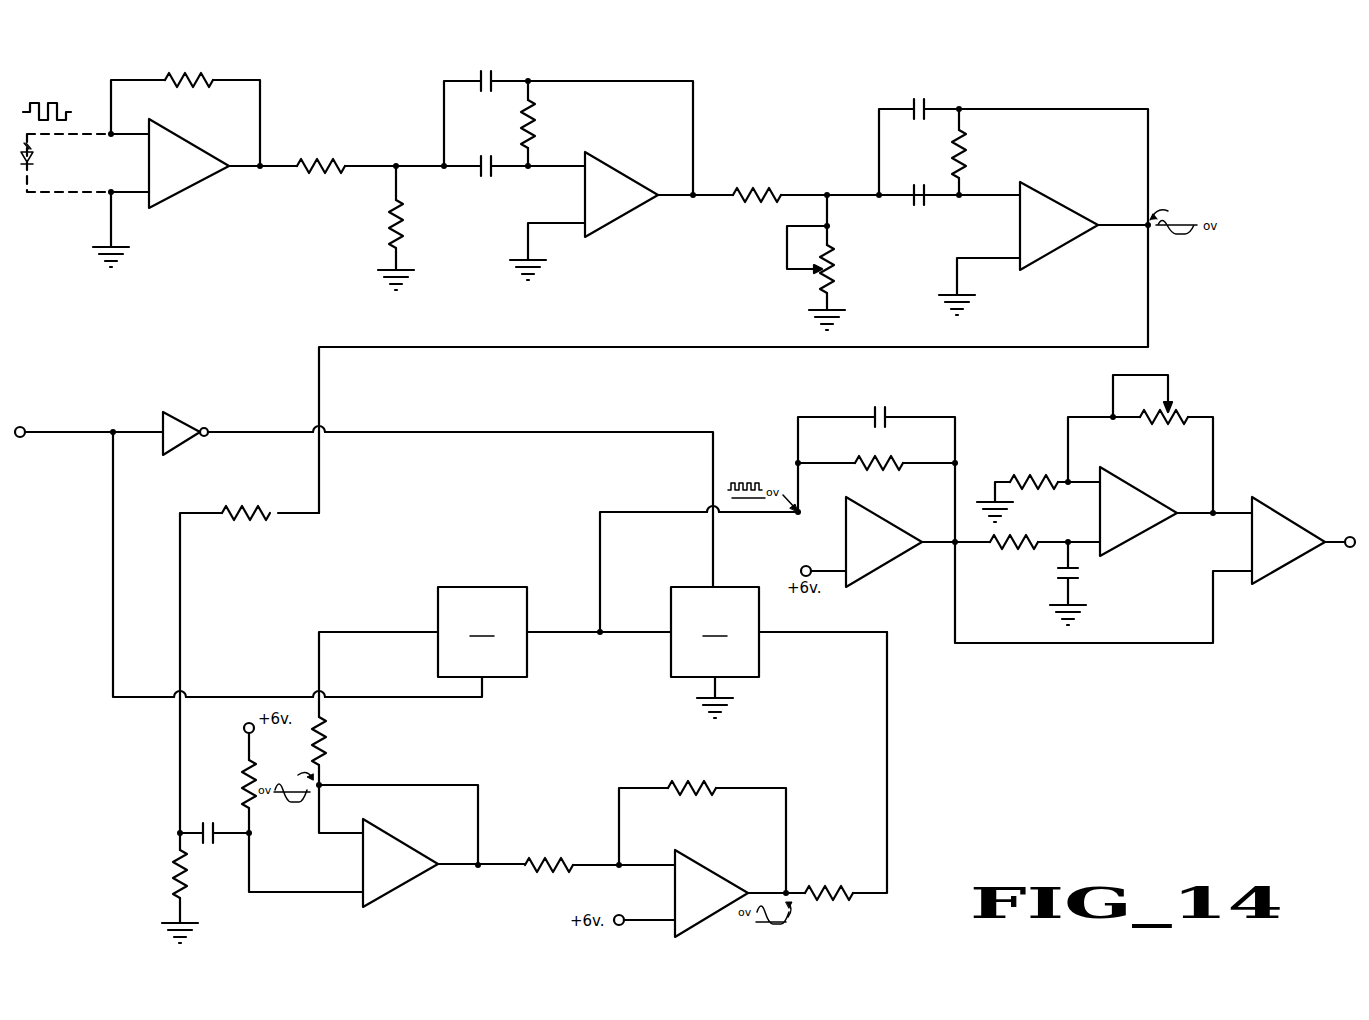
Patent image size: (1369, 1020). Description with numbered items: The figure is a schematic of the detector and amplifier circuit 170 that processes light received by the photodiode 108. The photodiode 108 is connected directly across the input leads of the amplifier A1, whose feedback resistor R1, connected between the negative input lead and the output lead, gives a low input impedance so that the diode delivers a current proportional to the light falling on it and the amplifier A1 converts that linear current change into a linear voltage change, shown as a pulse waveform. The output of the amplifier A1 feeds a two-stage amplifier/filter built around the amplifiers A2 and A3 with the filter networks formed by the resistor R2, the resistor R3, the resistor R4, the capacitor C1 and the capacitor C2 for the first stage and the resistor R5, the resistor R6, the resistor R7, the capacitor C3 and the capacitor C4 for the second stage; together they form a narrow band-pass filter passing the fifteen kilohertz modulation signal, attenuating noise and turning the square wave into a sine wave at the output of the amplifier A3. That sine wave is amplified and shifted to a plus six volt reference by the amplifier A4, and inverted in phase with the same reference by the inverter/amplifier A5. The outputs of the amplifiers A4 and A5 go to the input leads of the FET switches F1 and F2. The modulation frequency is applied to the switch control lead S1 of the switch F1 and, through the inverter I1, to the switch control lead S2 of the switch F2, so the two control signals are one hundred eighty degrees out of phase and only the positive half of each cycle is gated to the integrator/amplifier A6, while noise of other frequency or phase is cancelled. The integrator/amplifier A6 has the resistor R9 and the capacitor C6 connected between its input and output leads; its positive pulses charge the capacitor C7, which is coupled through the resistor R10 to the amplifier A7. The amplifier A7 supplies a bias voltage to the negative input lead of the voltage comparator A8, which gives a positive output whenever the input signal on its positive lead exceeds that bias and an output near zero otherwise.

The photodiode 108 is at (40, 160).
The amplifier circuit 170 is at (1070, 87).
The amplifier A1 is at (180, 138).
The amplifier A2 is at (612, 166).
The amplifier A3 is at (1040, 197).
The amplifier A4 is at (385, 834).
The inverter/amplifier A5 is at (690, 858).
The integrator/amplifier A6 is at (876, 520).
The amplifier A7 is at (1125, 488).
The voltage comparator A8 is at (1268, 512).
The feedback resistor R1 is at (190, 75).
The resistor R2 is at (325, 160).
The resistor R3 is at (390, 210).
The resistor R4 is at (535, 118).
The resistor R5 is at (758, 190).
The resistor R6 is at (838, 272).
The resistor R7 is at (966, 152).
The resistor R9 is at (866, 455).
The resistor R10 is at (1036, 550).
The capacitor C1 is at (492, 75).
The capacitor C2 is at (492, 172).
The capacitor C3 is at (925, 103).
The capacitor C4 is at (925, 200).
The capacitor C6 is at (886, 412).
The capacitor C7 is at (1074, 576).
The inverter I1 is at (180, 425).
The field effect transistor switch F1 is at (482, 632).
The field effect transistor switch F2 is at (715, 652).
The switch control lead S1 is at (452, 700).
The switch control lead S2 is at (713, 530).